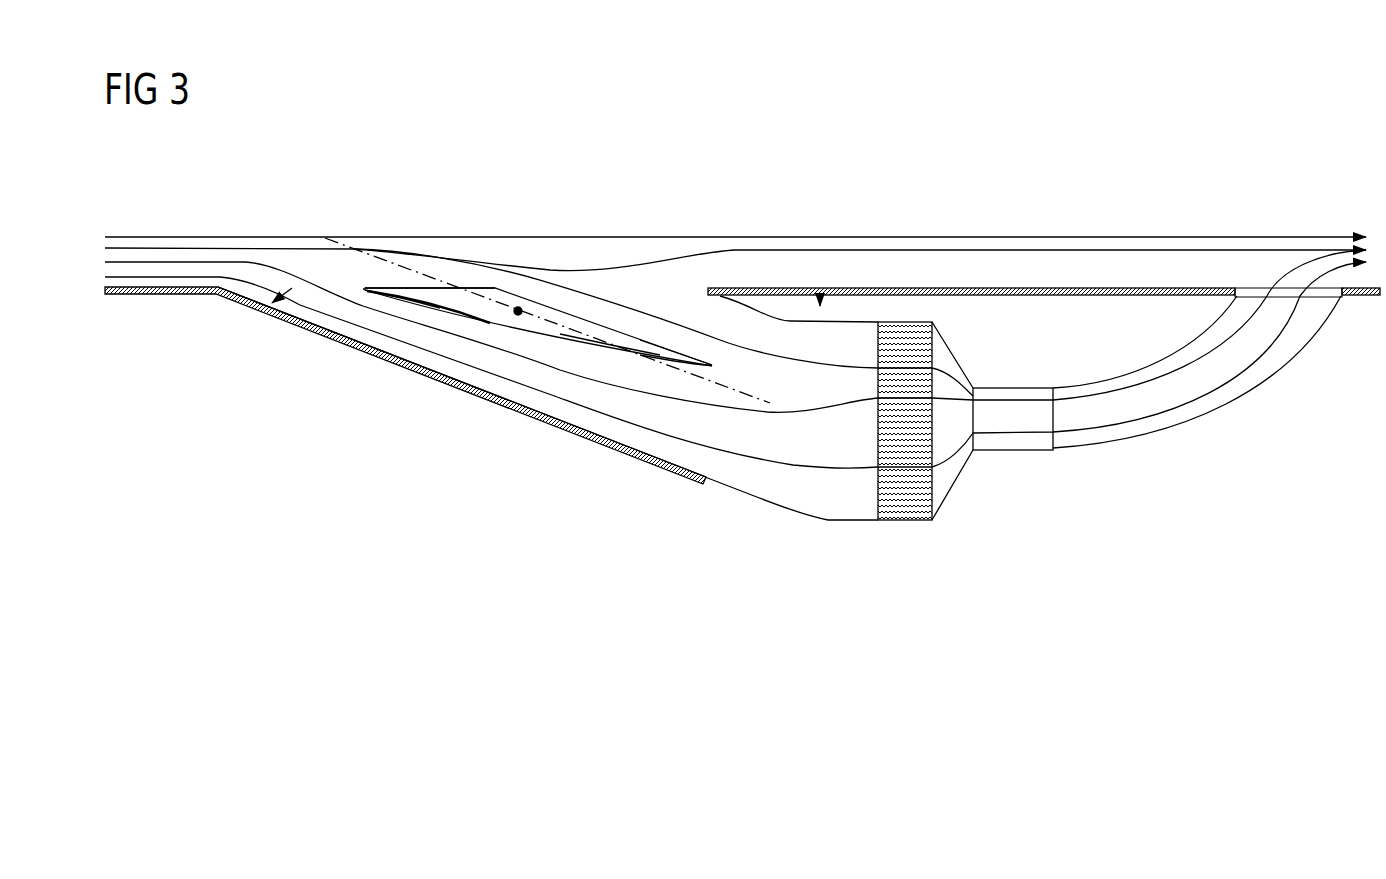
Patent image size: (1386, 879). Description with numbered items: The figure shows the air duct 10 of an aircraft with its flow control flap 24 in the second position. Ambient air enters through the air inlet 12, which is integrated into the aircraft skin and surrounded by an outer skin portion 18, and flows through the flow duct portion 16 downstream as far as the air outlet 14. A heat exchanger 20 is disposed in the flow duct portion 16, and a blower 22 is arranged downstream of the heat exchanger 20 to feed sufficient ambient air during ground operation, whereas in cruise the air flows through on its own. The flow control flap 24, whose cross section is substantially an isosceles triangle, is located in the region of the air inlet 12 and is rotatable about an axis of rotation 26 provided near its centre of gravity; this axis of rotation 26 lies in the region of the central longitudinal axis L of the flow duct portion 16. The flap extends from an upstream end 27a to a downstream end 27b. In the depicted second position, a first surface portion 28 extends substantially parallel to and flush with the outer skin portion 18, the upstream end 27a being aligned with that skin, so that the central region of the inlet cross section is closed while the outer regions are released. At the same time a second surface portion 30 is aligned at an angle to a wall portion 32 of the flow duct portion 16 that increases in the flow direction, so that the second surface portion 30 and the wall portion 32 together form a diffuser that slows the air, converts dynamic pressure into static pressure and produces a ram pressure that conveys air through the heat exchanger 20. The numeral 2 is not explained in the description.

The air duct 10 is at (1243, 170).
The air inlet 12 is at (260, 288).
The air outlet 14 is at (1260, 294).
The flow duct portion 16 is at (818, 287).
The aircraft outer skin portion 18 is at (163, 295).
The heat exchanger 20 is at (907, 510).
The blower 22 is at (1010, 442).
The flow control flap 24 is at (658, 357).
The axis of rotation 26 is at (519, 310).
The upstream end 27a is at (372, 298).
The downstream end 27b is at (699, 358).
The first surface portion 28 is at (391, 285).
The second surface portion 30 is at (488, 326).
The wall portion 32 is at (403, 368).
The flap / airfoil 2 is at (528, 317).
The central longitudinal axis L is at (727, 384).